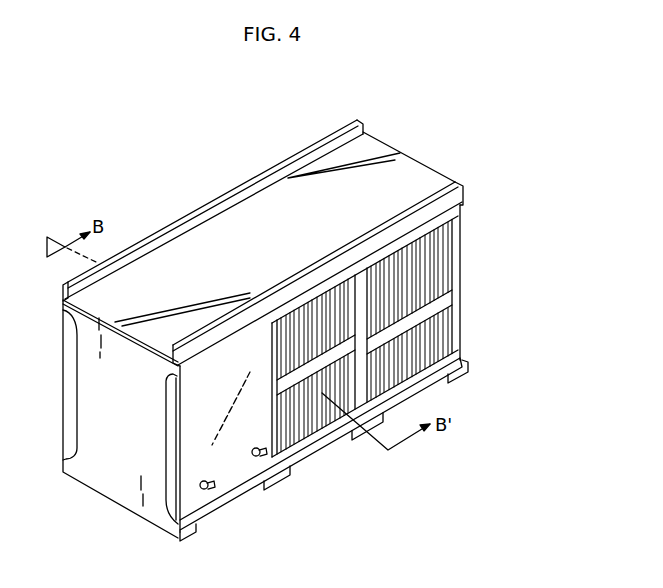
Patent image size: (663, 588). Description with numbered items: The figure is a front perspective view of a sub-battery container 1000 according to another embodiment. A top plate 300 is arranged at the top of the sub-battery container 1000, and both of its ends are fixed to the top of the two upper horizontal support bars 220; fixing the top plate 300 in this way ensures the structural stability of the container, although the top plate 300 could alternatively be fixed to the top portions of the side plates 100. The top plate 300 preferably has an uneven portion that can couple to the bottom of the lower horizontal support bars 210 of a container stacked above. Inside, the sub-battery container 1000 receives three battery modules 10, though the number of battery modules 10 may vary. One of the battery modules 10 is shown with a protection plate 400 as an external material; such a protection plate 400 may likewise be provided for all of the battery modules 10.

The sub-battery container 1000 is at (124, 189).
The top plate 300 is at (216, 224).
The upper horizontal support bars 220 is at (466, 212).
The battery module 10 is at (428, 297).
The side plates 100 is at (84, 377).
The protection plate 400 is at (233, 465).
The lower horizontal support bars 210 is at (189, 526).